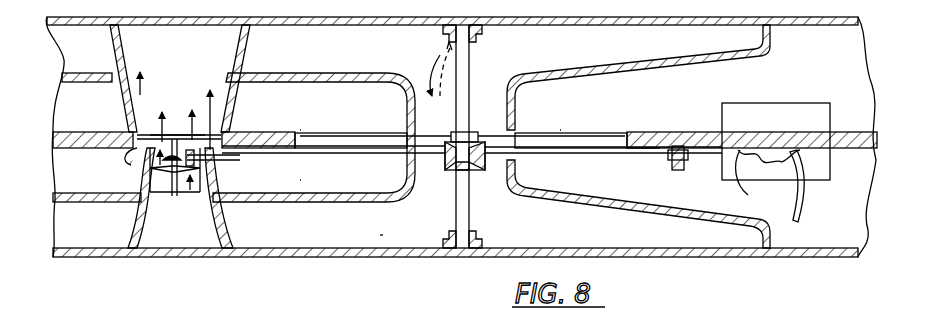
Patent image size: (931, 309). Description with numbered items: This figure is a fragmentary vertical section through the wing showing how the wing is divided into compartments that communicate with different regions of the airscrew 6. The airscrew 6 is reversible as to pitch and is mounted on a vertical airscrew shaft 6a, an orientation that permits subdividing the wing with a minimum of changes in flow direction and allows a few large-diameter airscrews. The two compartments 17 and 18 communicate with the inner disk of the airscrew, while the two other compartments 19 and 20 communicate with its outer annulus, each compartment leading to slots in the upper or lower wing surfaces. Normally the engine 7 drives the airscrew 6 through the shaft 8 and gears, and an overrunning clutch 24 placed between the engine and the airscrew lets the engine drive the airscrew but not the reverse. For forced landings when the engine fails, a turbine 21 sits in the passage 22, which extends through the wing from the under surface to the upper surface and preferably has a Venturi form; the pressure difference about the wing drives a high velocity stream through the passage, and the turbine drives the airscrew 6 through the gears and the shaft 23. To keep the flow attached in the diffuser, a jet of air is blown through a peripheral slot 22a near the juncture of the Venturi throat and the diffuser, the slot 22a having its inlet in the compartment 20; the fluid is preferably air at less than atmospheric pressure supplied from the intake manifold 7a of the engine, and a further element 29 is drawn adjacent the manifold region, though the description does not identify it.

The airscrew 6 is at (596, 132).
The airscrew shaft 6a is at (464, 75).
The engine 7 is at (754, 118).
The intake manifold 7a is at (768, 183).
The shaft 8 is at (635, 152).
The compartment 17 is at (394, 72).
The compartment 18 is at (512, 234).
The compartment 19 is at (340, 132).
The compartment 20 is at (354, 190).
The turbine 21 is at (160, 176).
The passage 22 is at (173, 223).
The peripheral slot 22a is at (210, 147).
The shaft 23 is at (238, 158).
The overrunning clutch 24 is at (683, 164).
The curved guide 29 is at (802, 196).